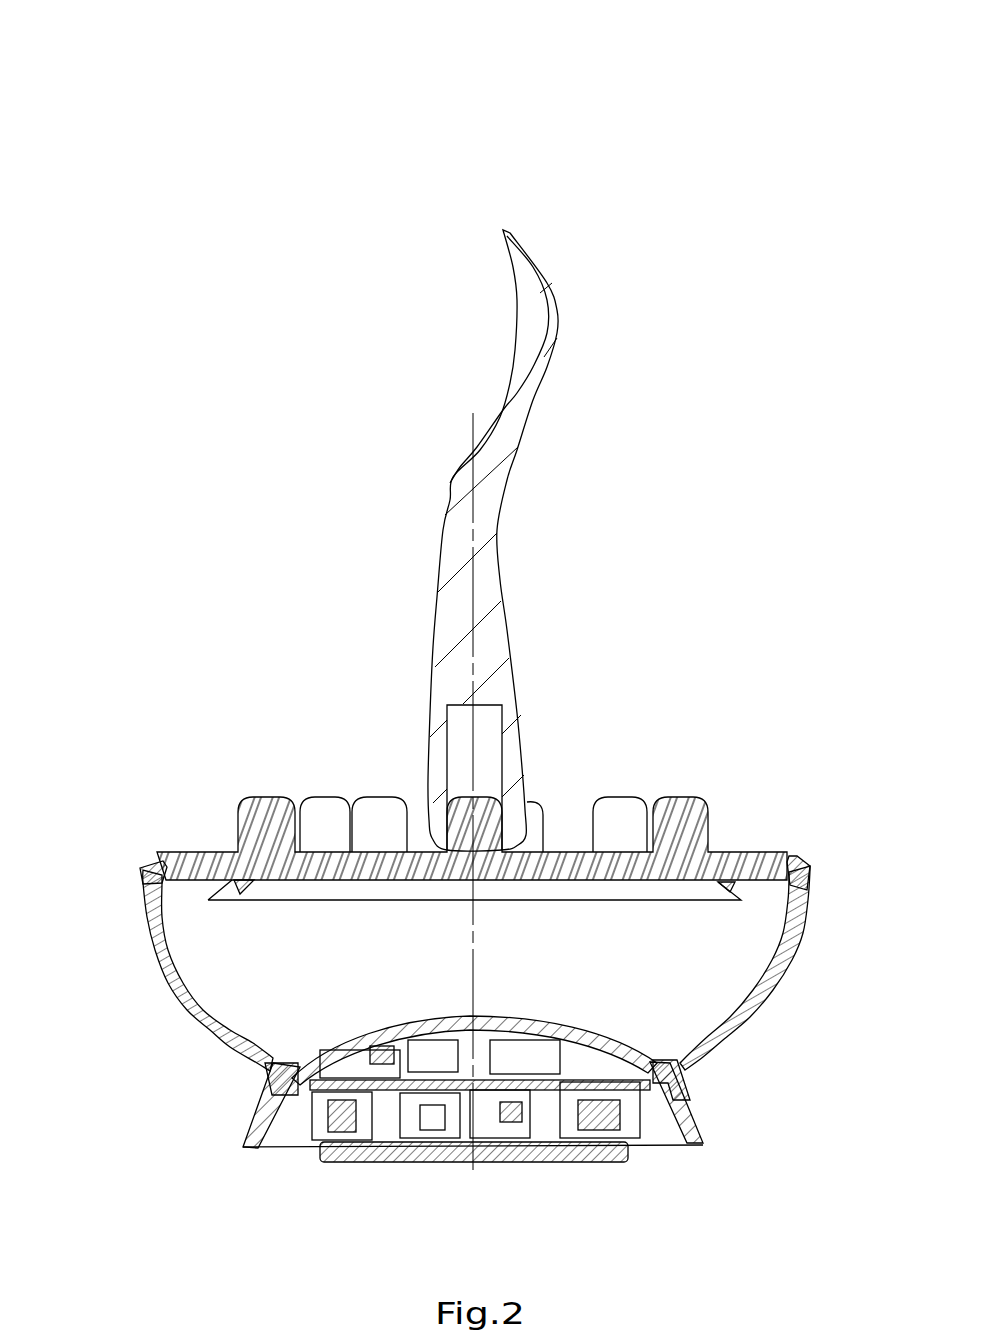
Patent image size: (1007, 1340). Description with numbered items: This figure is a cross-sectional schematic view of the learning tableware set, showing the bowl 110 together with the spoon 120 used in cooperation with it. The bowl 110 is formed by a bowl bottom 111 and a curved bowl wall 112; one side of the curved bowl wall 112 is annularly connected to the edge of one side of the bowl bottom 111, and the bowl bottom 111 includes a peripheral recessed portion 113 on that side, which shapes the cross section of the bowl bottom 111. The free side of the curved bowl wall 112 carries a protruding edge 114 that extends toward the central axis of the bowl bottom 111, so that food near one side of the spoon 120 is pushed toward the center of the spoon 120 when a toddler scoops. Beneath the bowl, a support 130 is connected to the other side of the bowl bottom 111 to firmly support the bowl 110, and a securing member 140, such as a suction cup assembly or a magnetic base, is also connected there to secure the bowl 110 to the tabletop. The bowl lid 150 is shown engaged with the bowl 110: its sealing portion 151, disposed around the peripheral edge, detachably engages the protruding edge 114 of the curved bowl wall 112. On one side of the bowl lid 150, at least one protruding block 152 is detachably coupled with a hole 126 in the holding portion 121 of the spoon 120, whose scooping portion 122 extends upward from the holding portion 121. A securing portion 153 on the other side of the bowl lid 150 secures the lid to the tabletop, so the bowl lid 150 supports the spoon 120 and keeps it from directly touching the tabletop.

The bowl 110 is at (437, 1028).
The bowl bottom 111 is at (308, 1052).
The curved bowl wall 112 is at (158, 963).
The peripheral recessed portion 113 is at (668, 1048).
The protruding edge 114 is at (155, 862).
The spoon 120 is at (555, 530).
The holding portion 121 is at (454, 556).
The scooping portion 122 is at (553, 338).
The hole 126 is at (490, 738).
The support 130 is at (707, 1133).
The securing member 140 is at (600, 1162).
The bowl lid 150 is at (518, 773).
The sealing portion 151 is at (789, 856).
The protruding block 152 is at (627, 812).
The securing portion 153 is at (746, 903).